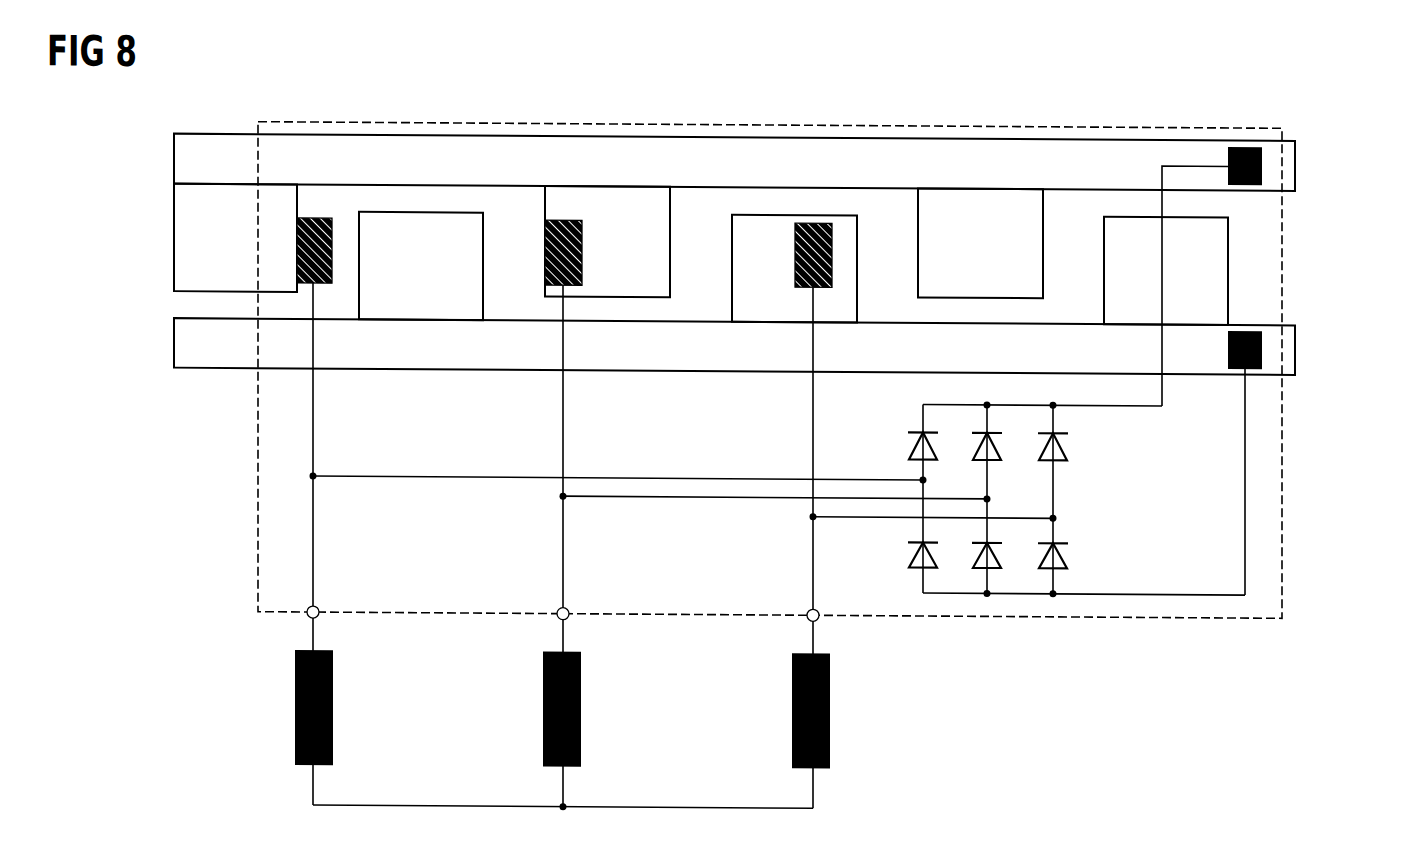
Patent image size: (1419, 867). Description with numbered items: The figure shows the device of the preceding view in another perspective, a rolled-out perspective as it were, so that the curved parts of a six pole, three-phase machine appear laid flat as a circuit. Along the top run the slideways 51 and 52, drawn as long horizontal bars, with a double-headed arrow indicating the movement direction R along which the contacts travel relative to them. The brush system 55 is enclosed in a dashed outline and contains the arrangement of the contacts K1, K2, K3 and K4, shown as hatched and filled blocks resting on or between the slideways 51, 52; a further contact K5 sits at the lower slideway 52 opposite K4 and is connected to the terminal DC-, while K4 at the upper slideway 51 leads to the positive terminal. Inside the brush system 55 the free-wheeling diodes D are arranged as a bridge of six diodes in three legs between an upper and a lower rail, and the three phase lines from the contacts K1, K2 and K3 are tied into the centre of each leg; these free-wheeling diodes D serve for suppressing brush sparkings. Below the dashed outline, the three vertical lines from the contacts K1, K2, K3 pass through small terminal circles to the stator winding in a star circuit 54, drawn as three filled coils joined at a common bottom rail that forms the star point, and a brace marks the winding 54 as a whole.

The slideway 51 is at (184, 155).
The slideway 52 is at (184, 345).
The stator winding in a star circuit 54 is at (830, 815).
The brush system 55 is at (1160, 612).
The contact K1 is at (313, 216).
The contact K2 is at (563, 216).
The contact K3 is at (813, 218).
The contact K4 is at (1247, 139).
The DC- contact K5 is at (1243, 366).
The free-wheeling diode D is at (1062, 549).
The negative DC terminal DC- is at (1296, 353).
The movement direction R is at (1008, 106).